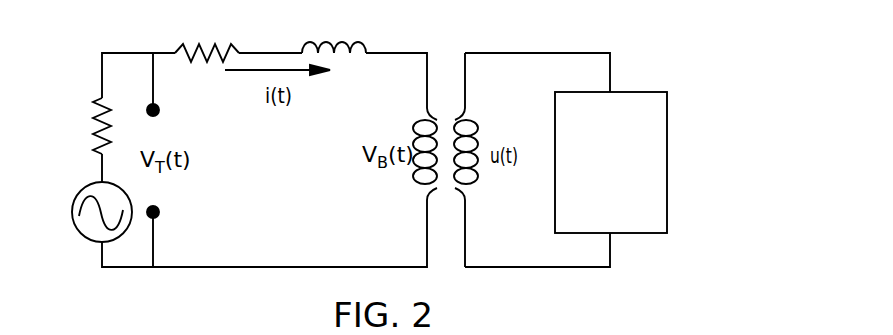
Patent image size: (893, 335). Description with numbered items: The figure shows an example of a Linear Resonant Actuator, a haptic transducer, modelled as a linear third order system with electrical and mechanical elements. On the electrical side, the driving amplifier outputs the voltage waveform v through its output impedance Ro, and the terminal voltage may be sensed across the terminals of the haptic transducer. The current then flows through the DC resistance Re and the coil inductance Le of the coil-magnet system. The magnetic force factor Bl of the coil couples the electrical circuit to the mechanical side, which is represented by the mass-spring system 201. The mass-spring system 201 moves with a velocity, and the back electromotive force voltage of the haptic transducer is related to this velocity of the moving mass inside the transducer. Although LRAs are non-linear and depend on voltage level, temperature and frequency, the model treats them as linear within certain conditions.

The mass-spring system 201 is at (667, 167).
The output impedance Ro is at (89, 116).
The DC resistance Re is at (207, 39).
The coil inductance Le is at (334, 33).
The magnetic force factor Bl is at (445, 142).
The voltage waveform v is at (93, 198).